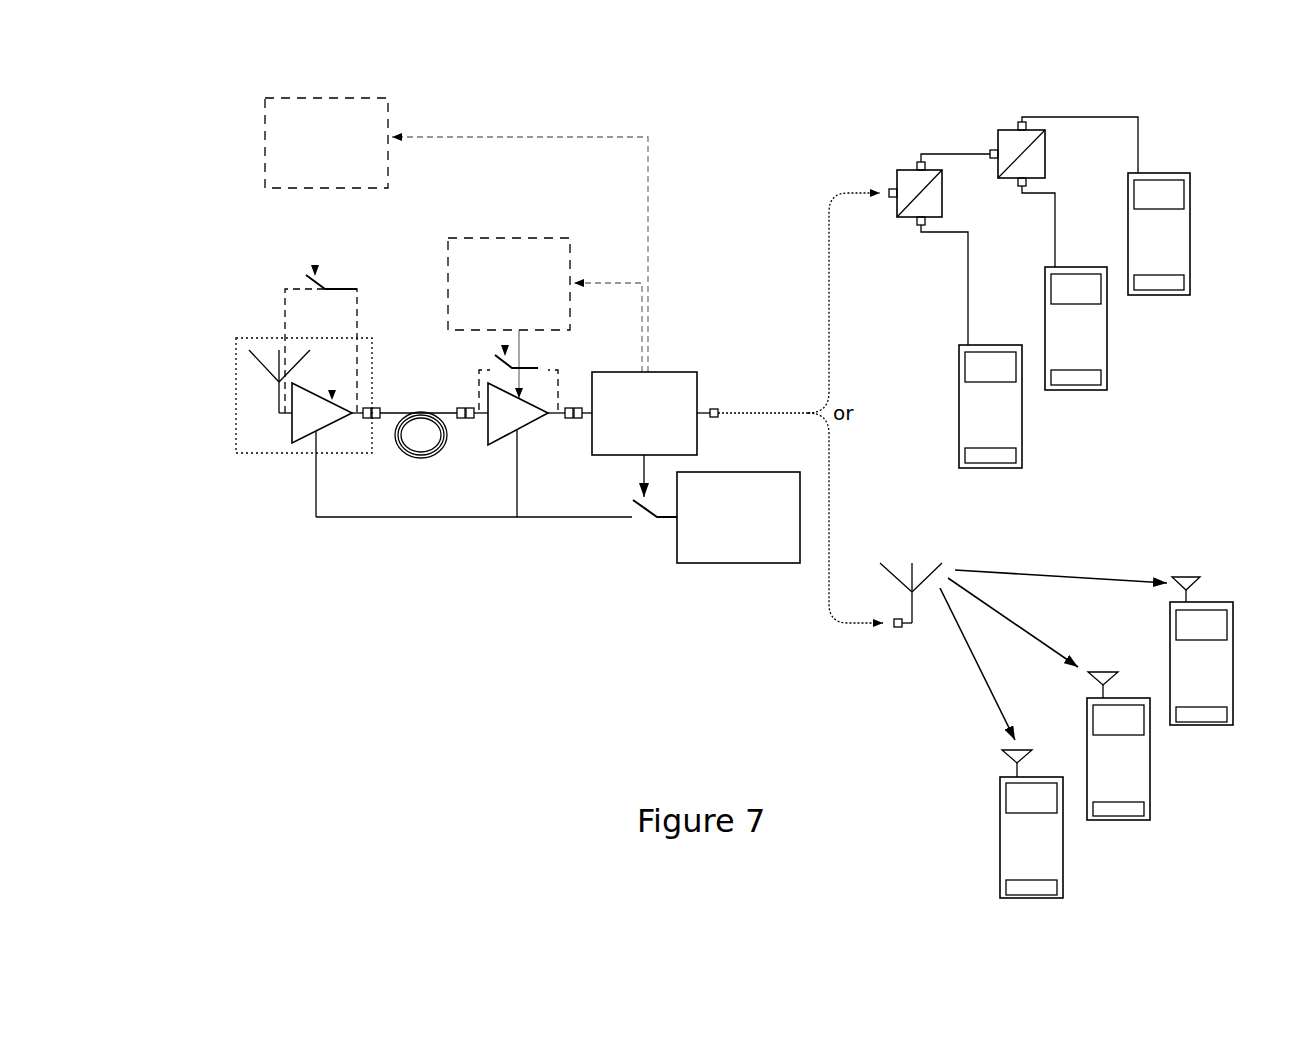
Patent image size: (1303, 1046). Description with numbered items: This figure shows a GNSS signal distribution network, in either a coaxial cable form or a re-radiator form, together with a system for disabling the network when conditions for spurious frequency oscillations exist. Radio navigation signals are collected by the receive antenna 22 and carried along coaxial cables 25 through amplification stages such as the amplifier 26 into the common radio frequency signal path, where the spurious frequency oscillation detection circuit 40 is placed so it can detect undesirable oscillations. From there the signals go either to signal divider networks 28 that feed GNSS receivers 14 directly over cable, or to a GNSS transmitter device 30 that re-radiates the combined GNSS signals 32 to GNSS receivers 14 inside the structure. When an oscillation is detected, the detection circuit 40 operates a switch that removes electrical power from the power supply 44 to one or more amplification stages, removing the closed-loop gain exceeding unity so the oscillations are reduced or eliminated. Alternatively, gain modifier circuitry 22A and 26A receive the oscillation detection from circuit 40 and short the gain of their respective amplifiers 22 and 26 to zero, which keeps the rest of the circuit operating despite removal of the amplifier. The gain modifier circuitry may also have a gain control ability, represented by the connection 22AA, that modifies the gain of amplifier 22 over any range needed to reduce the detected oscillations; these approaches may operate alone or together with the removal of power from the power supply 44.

The GNSS receivers 14 is at (1022, 468).
The receive antenna 22 is at (270, 455).
The gain modifier circuitry 22A is at (299, 92).
The gain control connection 22AA is at (333, 253).
The coaxial cables 25 is at (422, 407).
The amplification stage 26 is at (525, 430).
The gain modifier circuitry 26A is at (543, 237).
The signal divider networks 28 is at (910, 162).
The GNSS transmitter device 30 is at (903, 563).
The combined GNSS signals 32 is at (1102, 577).
The spurious frequency oscillation detection circuit 40 is at (655, 372).
The power supply 44 is at (755, 568).